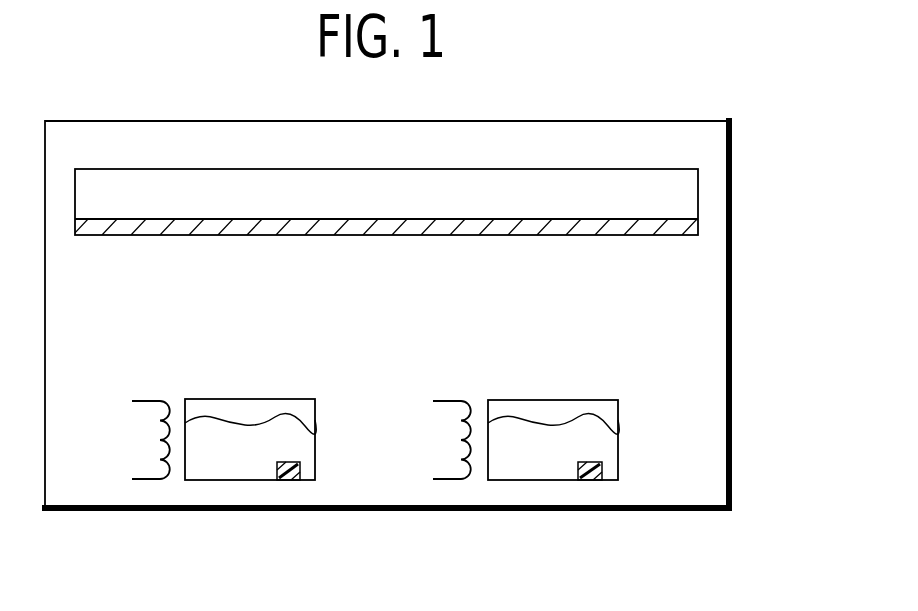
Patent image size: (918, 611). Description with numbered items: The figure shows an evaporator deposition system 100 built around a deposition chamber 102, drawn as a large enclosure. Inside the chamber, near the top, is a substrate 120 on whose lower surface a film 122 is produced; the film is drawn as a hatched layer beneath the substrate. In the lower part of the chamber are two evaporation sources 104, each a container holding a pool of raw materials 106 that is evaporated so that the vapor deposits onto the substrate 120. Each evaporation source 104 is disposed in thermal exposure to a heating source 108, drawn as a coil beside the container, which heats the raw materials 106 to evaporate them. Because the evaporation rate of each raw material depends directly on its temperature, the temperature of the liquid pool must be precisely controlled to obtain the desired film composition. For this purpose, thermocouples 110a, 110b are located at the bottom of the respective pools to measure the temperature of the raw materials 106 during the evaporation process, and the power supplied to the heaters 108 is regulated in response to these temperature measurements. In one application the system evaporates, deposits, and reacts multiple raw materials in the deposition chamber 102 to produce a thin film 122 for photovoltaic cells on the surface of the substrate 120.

The deposition system 100 is at (478, 104).
The deposition chamber 102 is at (734, 320).
The evaporation source 104 is at (253, 391).
The raw materials 106 is at (265, 460).
The heating source 108 is at (143, 397).
The thermocouple 110a is at (290, 480).
The thermocouple 110b is at (590, 480).
The substrate 120 is at (405, 210).
The film 122 is at (645, 238).